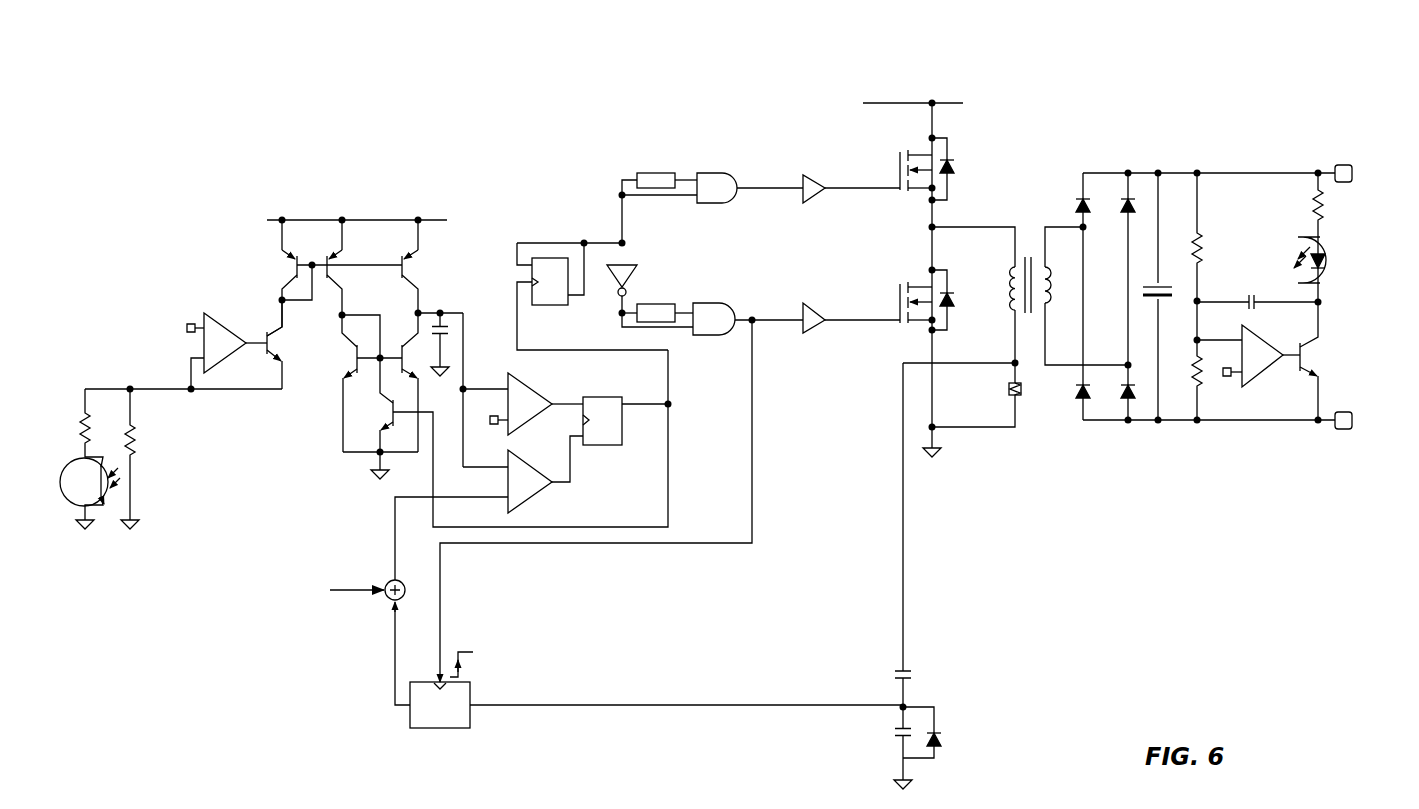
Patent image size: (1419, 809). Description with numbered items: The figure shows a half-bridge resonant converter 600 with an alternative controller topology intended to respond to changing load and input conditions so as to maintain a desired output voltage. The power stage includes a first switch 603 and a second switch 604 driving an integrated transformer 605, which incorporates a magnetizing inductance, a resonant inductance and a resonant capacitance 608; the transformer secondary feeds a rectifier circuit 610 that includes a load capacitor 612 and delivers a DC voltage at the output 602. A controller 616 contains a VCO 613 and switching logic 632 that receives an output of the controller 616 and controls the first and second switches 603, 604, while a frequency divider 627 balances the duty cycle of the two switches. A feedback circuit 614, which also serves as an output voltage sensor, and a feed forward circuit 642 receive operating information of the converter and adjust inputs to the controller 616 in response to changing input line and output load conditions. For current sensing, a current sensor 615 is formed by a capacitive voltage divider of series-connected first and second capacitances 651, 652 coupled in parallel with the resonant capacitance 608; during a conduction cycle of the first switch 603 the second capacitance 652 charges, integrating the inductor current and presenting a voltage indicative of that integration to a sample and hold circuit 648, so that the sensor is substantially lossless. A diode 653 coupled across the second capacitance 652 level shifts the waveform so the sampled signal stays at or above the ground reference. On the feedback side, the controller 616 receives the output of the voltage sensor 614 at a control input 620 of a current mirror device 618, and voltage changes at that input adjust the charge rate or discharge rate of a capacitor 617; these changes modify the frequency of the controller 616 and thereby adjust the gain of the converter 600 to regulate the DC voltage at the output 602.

The half-bridge resonant converter 600 is at (763, 57).
The output 602 is at (1370, 212).
The first switch 603 is at (898, 168).
The second switch 604 is at (898, 300).
The integrated transformer 605 is at (1022, 205).
The resonant capacitance 608 is at (1022, 390).
The rectifier circuit 610 is at (1137, 122).
The load capacitor 612 is at (1172, 293).
The VCO 613 is at (370, 193).
The feedback circuit 614 is at (120, 545).
The current sensor 615 is at (1000, 680).
The controller 616 is at (498, 102).
The capacitor 617 is at (447, 330).
The current mirror device 618 is at (255, 265).
The control input 620 is at (185, 355).
The frequency divider 627 is at (545, 302).
The switching logic 632 is at (695, 150).
The feed forward circuit 642 is at (543, 652).
The sample and hold circuit 648 is at (447, 730).
The first capacitance 651 is at (910, 672).
The second capacitance 652 is at (897, 738).
The diode 653 is at (943, 733).